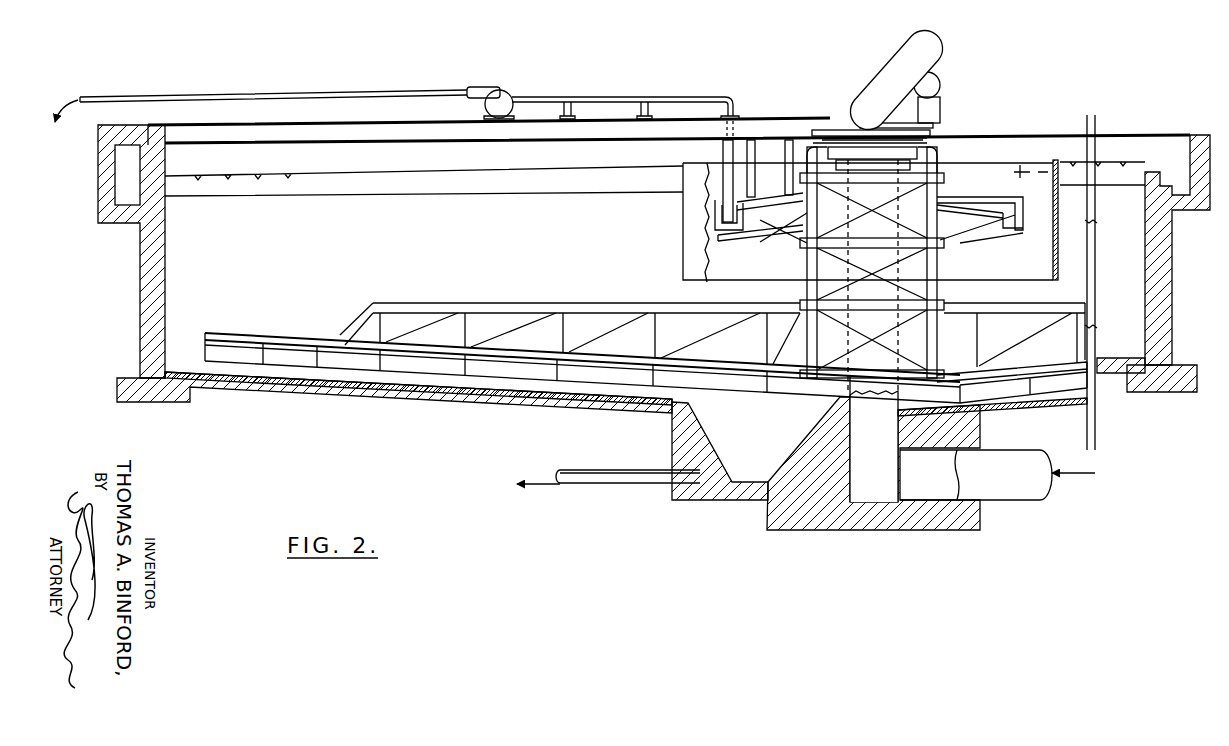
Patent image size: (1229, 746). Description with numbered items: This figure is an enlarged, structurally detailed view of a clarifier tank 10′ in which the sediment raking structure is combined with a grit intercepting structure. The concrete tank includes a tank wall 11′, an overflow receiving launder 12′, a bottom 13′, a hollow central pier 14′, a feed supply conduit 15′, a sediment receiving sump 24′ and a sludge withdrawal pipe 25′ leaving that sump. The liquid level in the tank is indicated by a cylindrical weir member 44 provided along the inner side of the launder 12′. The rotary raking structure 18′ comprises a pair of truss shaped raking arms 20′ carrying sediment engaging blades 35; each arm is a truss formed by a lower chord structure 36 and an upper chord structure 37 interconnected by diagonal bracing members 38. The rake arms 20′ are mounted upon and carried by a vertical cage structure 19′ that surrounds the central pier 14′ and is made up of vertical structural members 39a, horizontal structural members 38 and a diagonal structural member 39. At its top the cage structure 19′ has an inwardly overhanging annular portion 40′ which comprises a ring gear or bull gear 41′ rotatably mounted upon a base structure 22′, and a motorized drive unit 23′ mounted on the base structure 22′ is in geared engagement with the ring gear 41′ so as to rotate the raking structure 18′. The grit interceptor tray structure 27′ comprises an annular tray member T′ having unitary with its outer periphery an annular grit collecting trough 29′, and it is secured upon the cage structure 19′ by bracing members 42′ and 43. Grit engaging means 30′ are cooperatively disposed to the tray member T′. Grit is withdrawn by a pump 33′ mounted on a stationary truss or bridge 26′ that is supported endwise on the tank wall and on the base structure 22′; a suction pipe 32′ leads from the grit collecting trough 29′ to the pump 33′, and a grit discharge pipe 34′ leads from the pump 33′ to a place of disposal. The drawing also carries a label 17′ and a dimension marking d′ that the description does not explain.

The clarifier tank 10′ is at (573, 413).
The tank wall 11′ is at (168, 252).
The overflow receiving launder 12′ is at (1177, 177).
The bottom 13′ is at (467, 387).
The hollow central pier 14′ is at (910, 333).
The feed supply conduit 15′ is at (1003, 493).
The partition plate 17′ is at (1060, 233).
The rotary raking structure 18′ is at (778, 318).
The vertical cage structure 19′ is at (945, 287).
The truss shaped raking arms 20′ is at (577, 300).
The base structure 22′ is at (932, 125).
The motorized drive unit 23′ is at (892, 62).
The sediment receiving sump 24′ is at (740, 437).
The sludge withdrawal pipe 25′ is at (625, 483).
The stationary truss or bridge 26′ is at (278, 123).
The grit interceptor tray structure 27′ is at (978, 193).
The annular grit collecting trough 29′ is at (1094, 216).
The grit engaging means 30′ is at (768, 150).
The suction pipe 32′ is at (733, 103).
The pump 33′ is at (497, 75).
The grit discharge pipe 34′ is at (395, 90).
The sediment engaging blades 35 is at (330, 363).
The lower chord structure 36 is at (413, 353).
The upper chord structure 37 is at (473, 303).
The diagonal bracing members 38 is at (418, 327).
The diagonal structural member 39 is at (932, 347).
The vertical structural members 39a is at (895, 414).
The inwardly overhanging annular portion 40′ is at (808, 160).
The ring gear or bull gear 41′ is at (840, 138).
The bracing members 42′ is at (935, 298).
The bracing members 43 is at (992, 213).
The cylindrical weir member 44 is at (163, 183).
The annular tray member T′ is at (970, 196).
The depth d′ is at (1038, 172).